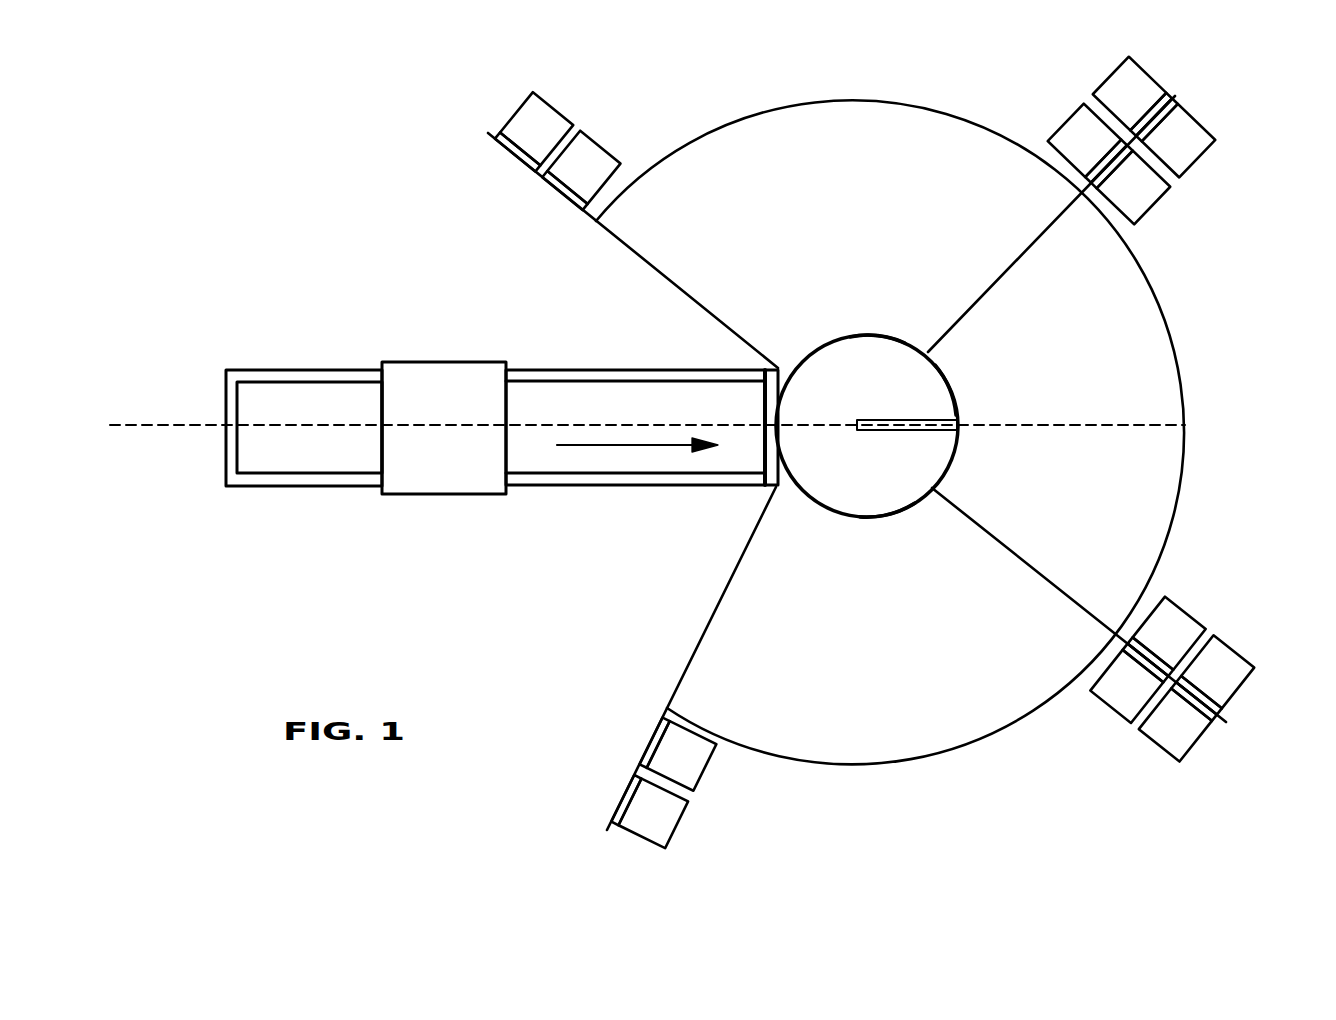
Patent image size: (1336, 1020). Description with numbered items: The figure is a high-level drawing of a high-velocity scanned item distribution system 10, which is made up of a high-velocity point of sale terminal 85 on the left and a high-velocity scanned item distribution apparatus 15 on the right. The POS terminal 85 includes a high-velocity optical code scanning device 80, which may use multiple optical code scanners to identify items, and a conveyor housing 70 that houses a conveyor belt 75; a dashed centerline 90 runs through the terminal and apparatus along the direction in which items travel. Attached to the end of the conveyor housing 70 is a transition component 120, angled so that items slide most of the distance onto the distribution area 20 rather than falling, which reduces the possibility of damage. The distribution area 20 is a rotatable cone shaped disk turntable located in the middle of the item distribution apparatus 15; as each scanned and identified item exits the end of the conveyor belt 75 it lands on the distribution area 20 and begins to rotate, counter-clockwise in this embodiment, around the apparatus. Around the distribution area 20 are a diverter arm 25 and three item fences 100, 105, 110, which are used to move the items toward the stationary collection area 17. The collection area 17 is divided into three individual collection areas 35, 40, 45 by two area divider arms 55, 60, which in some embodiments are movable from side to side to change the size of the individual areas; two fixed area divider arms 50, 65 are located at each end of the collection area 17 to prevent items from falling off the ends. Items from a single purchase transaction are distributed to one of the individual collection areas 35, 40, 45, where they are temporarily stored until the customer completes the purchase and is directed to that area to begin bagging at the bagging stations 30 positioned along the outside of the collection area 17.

The high-velocity scanned item distribution system 10 is at (258, 93).
The high-velocity scanned item distribution apparatus 15 is at (790, 62).
The collection area 17 is at (917, 130).
The distribution area 20 is at (830, 348).
The diverter arm 25 is at (905, 432).
The bagging stations 30 is at (553, 103).
The first individual collection area 35 is at (833, 227).
The second individual collection area 40 is at (1098, 382).
The third individual collection area 45 is at (923, 667).
The fixed area divider arm 50 is at (650, 270).
The area divider arm 55 is at (1018, 240).
The area divider arm 60 is at (1030, 555).
The fixed area divider arm 65 is at (745, 570).
The conveyor housing 70 is at (593, 368).
The conveyor belt 75 is at (682, 382).
The high-velocity optical code scanning device 80 is at (418, 362).
The high-velocity point of sale terminal 85 is at (278, 326).
The center axis 90 is at (175, 423).
The item fence 100 is at (880, 335).
The item fence 105 is at (947, 378).
The item fence 110 is at (885, 515).
The transition component 120 is at (765, 475).